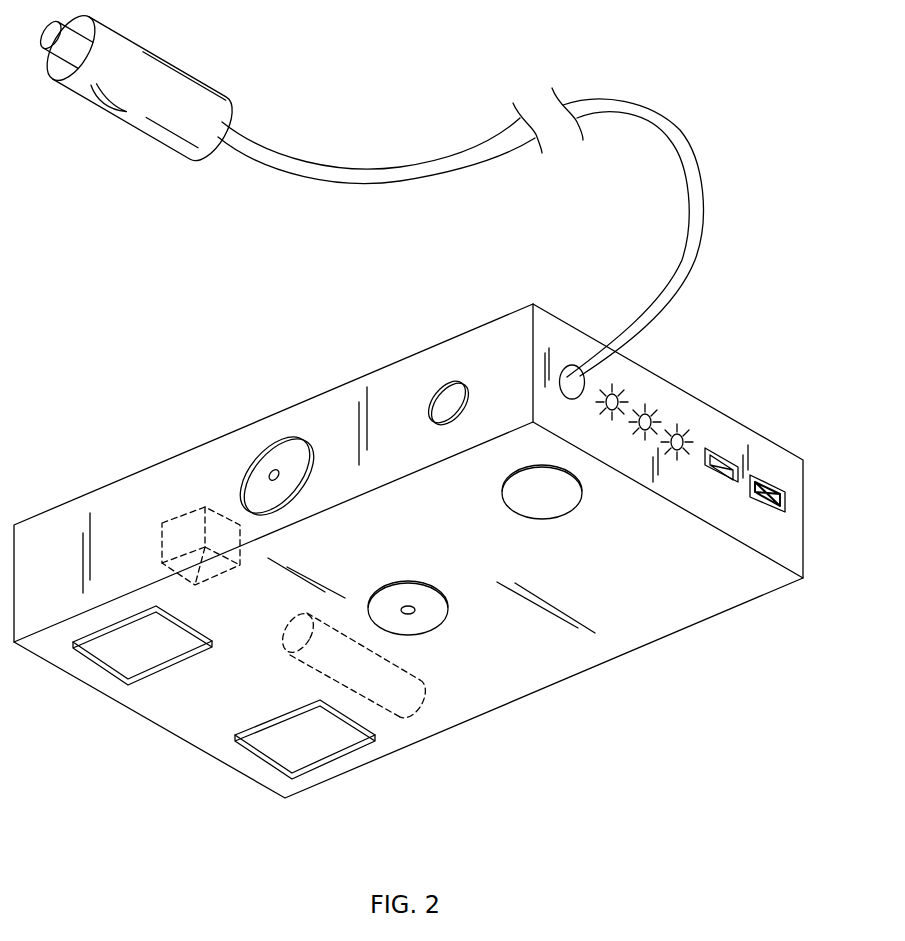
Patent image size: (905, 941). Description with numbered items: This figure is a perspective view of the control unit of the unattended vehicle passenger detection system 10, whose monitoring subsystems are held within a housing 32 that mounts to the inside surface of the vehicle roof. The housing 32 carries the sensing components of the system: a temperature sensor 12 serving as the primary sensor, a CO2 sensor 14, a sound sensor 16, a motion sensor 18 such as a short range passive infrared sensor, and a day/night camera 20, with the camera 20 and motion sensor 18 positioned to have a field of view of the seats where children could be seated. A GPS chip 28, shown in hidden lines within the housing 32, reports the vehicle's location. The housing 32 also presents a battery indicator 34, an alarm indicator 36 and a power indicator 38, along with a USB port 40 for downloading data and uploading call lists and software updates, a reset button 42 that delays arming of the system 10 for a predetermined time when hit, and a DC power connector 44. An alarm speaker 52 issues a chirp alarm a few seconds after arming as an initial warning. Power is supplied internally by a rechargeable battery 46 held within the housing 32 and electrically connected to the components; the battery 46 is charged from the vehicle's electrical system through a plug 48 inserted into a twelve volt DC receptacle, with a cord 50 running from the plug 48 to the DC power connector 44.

The unattended vehicle passenger detection system 10 is at (128, 268).
The temperature sensor 12 is at (282, 750).
The CO2 sensor 14 is at (565, 507).
The sound sensor 16 is at (447, 388).
The motion sensor 18 is at (430, 622).
The day/night camera 20 is at (275, 450).
The GPS chip 28 is at (196, 506).
The housing 32 is at (580, 680).
The battery indicator 34 is at (653, 418).
The alarm indicator 36 is at (685, 440).
The power indicator 38 is at (620, 398).
The USB port 40 is at (733, 464).
The reset button 42 is at (768, 507).
The DC power connector 44 is at (568, 366).
The rechargeable battery 46 is at (405, 713).
The plug 48 is at (152, 75).
The cord 50 is at (462, 160).
The alarm speaker 52 is at (115, 652).